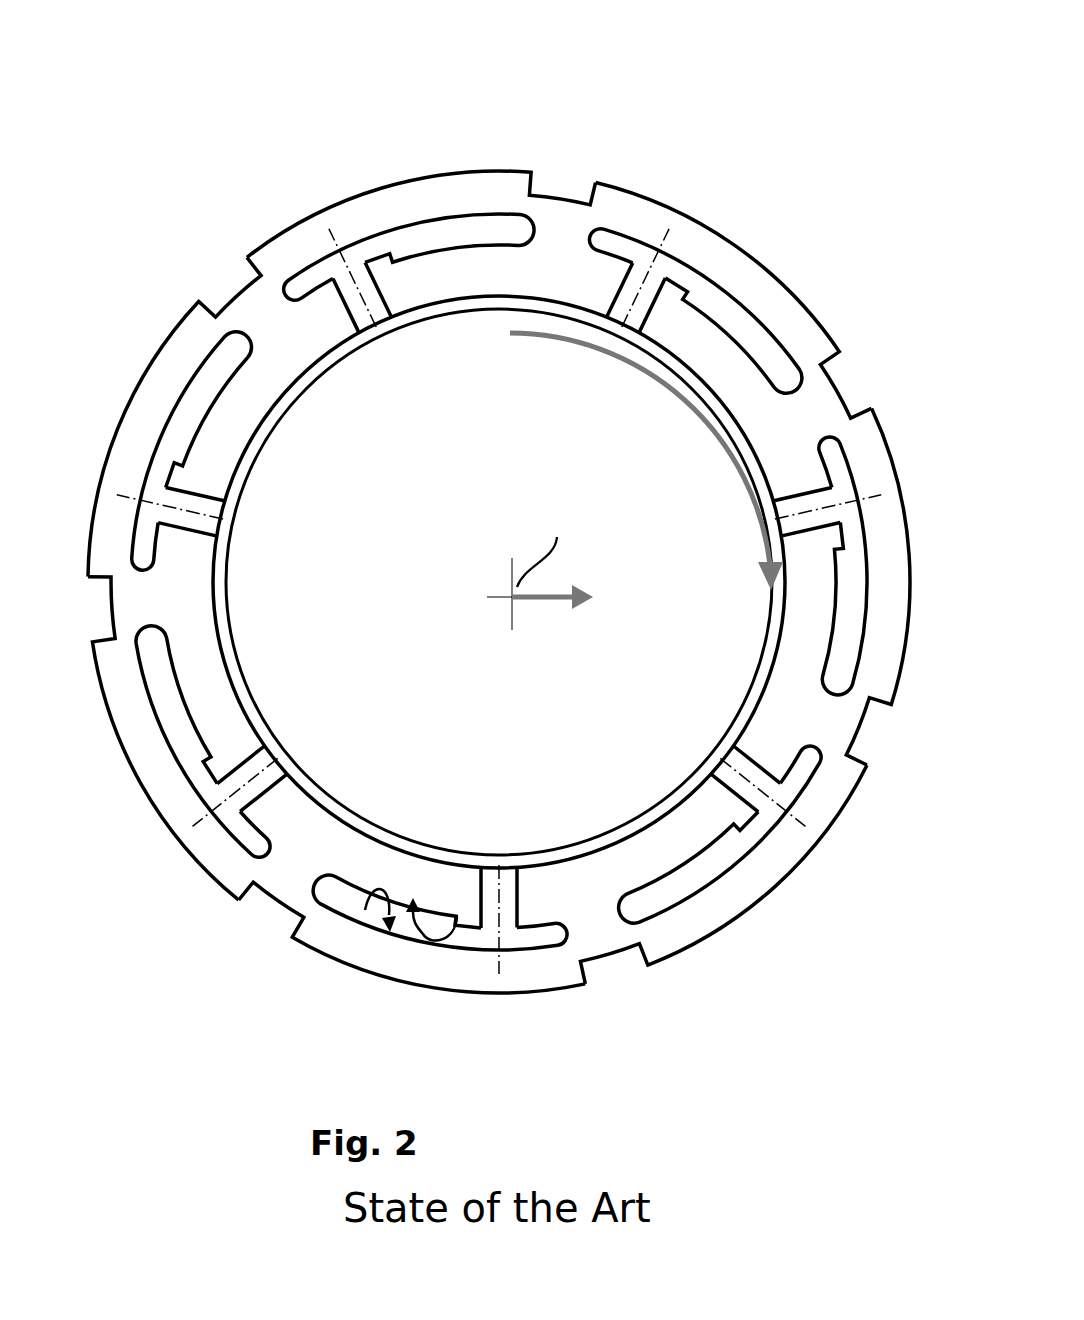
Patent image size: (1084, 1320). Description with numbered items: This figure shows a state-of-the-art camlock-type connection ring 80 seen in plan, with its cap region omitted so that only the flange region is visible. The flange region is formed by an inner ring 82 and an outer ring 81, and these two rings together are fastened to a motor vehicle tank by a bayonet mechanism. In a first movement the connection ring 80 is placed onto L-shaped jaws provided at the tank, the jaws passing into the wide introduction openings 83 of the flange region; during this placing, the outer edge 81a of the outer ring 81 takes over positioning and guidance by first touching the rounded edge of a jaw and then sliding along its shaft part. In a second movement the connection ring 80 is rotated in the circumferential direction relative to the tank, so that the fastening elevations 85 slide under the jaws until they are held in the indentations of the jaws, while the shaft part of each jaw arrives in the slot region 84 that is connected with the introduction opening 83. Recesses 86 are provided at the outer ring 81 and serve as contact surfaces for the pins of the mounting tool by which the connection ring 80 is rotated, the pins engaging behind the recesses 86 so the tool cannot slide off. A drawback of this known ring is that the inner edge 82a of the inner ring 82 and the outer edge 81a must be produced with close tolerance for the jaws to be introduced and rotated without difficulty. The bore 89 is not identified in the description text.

The connection ring 80 is at (762, 126).
The outer ring 81 is at (757, 275).
The outer edge 81a is at (369, 905).
The inner ring 82 is at (735, 385).
The inner edge 82a is at (457, 922).
The introduction opening 83 is at (491, 235).
The slot region 84 is at (353, 250).
The fastening elevation 85 is at (372, 306).
The recess 86 is at (228, 288).
The bore 89 is at (228, 637).